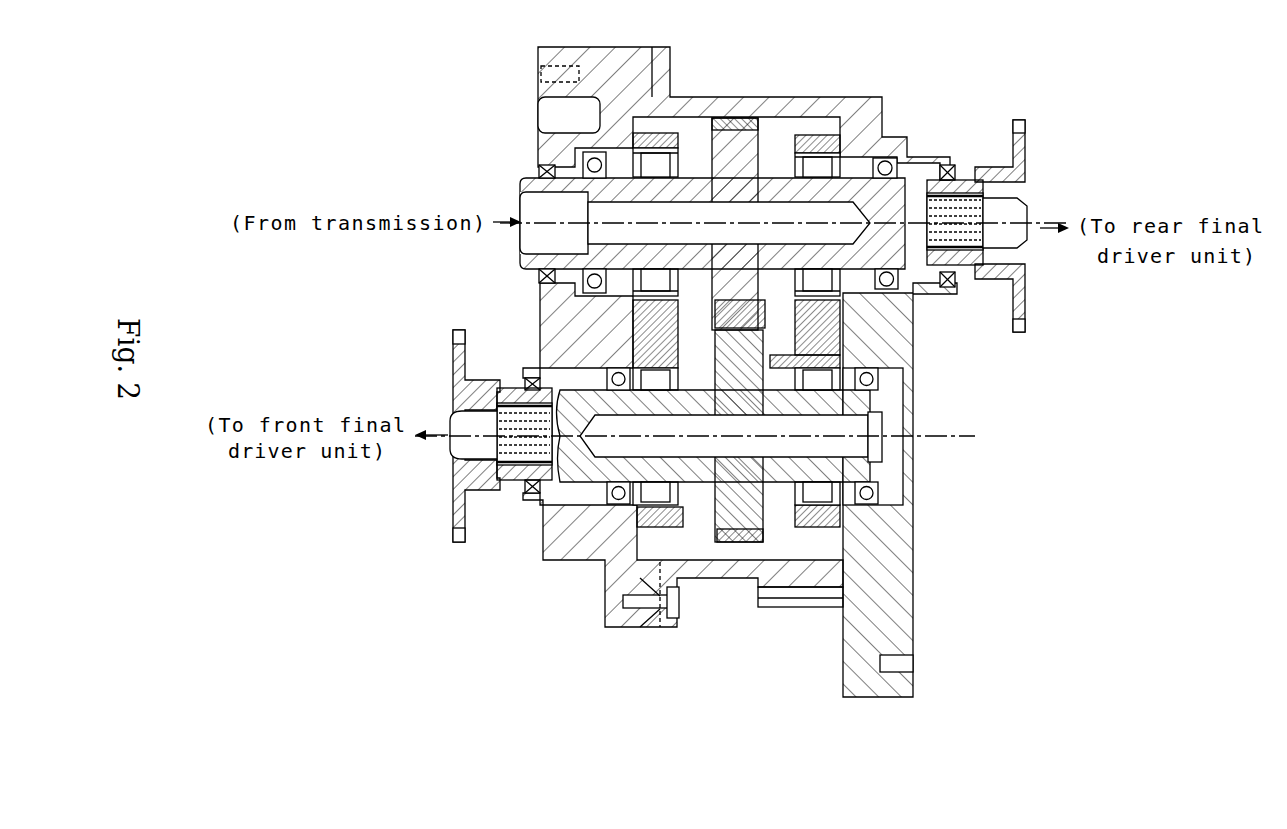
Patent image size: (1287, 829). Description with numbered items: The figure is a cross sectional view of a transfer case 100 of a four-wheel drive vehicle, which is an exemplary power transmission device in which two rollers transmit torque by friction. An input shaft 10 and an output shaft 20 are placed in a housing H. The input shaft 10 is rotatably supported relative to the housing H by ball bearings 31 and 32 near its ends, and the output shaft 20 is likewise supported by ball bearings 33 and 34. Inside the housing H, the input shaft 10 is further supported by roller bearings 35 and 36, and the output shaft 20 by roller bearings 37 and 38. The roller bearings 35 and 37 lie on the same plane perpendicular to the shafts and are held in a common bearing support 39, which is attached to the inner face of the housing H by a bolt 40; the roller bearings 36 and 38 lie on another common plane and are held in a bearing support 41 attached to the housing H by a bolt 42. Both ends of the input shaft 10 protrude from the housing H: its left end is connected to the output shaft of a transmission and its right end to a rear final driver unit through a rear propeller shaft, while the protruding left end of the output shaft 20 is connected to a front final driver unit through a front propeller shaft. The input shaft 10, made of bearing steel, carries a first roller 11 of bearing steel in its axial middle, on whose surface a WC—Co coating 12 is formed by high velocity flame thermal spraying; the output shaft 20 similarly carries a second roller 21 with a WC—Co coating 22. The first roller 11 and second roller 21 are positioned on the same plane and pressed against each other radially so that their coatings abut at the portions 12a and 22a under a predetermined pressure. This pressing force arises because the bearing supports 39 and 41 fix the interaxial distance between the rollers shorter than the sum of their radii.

The transfer case 100 is at (775, 95).
The housing H is at (635, 62).
The input shaft 10 is at (733, 181).
The first roller 11 is at (740, 118).
The WC—Co coating 12 is at (760, 124).
The abutting portion of coating 12a is at (800, 390).
The output shaft 20 is at (753, 469).
The second roller 21 is at (745, 546).
The WC—Co coating 22 is at (778, 330).
The abutting portion of coating 22a is at (713, 330).
The ball bearing 31 is at (575, 165).
The ball bearing 32 is at (888, 162).
The ball bearing 33 is at (600, 508).
The ball bearing 34 is at (878, 490).
The roller bearing 35 is at (655, 178).
The roller bearing 36 is at (812, 178).
The roller bearing 37 is at (660, 392).
The roller bearing 38 is at (818, 392).
The bearing support 39 is at (657, 170).
The bolt 40 is at (683, 325).
The bearing support 41 is at (815, 137).
The bolt 42 is at (785, 325).